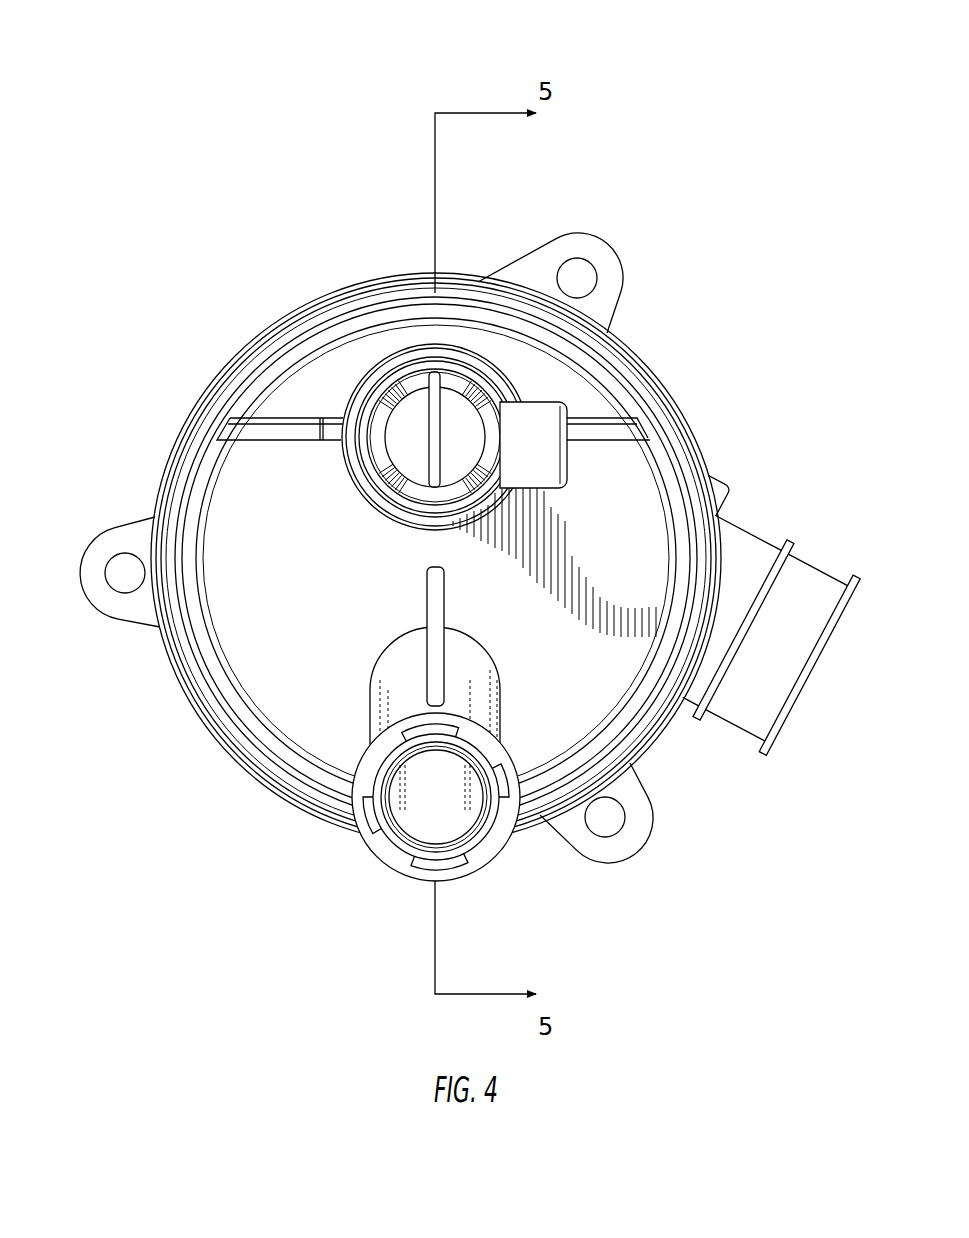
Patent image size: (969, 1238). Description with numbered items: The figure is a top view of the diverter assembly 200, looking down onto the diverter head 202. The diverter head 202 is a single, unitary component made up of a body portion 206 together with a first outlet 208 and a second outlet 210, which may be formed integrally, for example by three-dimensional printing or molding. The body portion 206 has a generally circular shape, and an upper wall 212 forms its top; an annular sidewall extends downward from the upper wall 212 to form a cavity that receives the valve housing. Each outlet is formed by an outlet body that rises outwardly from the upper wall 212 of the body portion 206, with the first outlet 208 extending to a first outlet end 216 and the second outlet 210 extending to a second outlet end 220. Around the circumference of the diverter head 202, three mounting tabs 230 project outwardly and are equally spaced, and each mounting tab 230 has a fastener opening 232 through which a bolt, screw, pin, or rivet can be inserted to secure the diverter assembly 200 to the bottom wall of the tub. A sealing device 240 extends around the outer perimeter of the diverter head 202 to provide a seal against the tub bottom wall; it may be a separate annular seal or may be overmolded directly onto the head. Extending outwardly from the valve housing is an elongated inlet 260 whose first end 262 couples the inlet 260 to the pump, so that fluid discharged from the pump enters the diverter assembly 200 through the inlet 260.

The diverter assembly 200 is at (743, 138).
The diverter head 202 is at (172, 391).
The body portion 206 is at (270, 690).
The first outlet 208 is at (383, 856).
The second outlet 210 is at (341, 392).
The upper wall 212 is at (632, 500).
The first outlet end 216 is at (505, 742).
The second outlet end 220 is at (362, 483).
The mounting tab 230 is at (106, 530).
The fastener opening 232 is at (125, 575).
The sealing device 240 is at (272, 765).
The elongated inlet 260 is at (766, 526).
The first end 262 is at (803, 700).